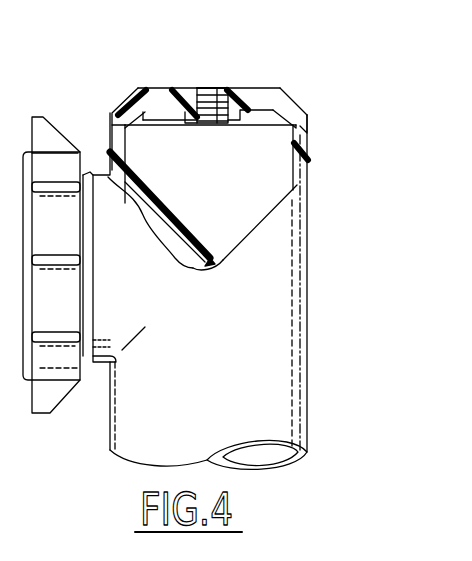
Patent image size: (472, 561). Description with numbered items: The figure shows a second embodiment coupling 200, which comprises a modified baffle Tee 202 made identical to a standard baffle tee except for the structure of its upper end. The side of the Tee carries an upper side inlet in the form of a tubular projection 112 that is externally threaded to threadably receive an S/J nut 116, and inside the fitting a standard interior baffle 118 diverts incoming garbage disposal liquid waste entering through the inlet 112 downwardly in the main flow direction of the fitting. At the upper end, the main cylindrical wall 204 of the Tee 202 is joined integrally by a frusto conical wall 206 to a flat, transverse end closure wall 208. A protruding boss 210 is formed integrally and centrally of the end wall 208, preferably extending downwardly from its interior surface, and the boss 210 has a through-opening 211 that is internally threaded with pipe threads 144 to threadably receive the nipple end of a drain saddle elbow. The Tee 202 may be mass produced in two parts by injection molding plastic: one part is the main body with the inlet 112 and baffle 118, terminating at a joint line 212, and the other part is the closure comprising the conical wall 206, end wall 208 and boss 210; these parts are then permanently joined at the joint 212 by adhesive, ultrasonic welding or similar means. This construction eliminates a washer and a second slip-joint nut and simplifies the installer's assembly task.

The coupling 200 is at (366, 28).
The modified baffle Tee 202 is at (307, 300).
The main cylindrical wall 204 is at (304, 145).
The frusto conical wall 206 is at (292, 100).
The end closure wall 208 is at (247, 92).
The boss 210 is at (185, 120).
The through-opening 211 is at (213, 92).
The joint line 212 is at (118, 108).
The pipe threads 144 is at (205, 86).
The baffle 118 is at (178, 212).
The tubular projection 112 is at (116, 360).
The S/J nut 116 is at (62, 404).